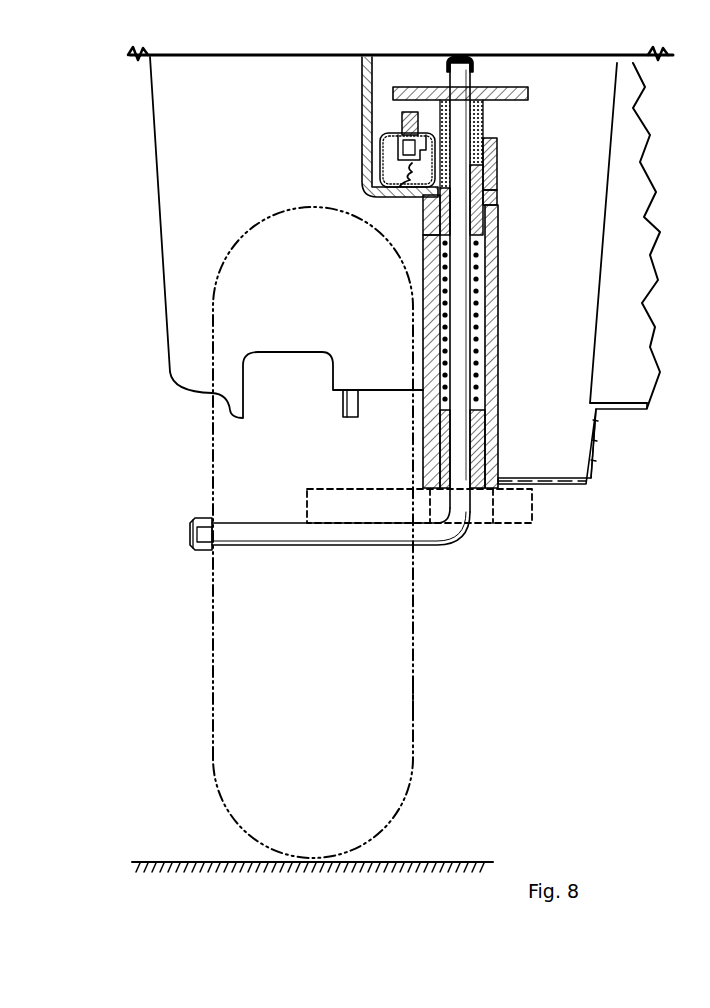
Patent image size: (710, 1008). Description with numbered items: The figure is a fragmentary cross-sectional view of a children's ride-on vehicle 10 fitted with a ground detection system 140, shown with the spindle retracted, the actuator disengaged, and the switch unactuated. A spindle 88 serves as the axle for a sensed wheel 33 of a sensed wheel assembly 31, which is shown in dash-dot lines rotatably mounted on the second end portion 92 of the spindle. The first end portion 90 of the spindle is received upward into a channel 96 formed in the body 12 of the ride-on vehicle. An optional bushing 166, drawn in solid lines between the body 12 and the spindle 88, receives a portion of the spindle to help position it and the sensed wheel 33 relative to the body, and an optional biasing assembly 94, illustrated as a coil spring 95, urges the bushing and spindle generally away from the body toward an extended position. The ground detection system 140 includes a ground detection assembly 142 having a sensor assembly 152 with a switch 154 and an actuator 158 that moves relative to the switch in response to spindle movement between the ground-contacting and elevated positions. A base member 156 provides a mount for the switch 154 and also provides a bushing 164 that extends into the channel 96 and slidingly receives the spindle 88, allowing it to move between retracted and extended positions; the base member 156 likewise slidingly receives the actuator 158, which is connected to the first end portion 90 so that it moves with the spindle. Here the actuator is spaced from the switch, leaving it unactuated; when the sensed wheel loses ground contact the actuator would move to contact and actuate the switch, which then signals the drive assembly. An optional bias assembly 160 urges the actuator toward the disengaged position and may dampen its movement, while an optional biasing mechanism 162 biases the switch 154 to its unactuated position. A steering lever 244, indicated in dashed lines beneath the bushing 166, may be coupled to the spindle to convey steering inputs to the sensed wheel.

The children's ride-on vehicle 10 is at (622, 470).
The body 12 is at (572, 486).
The sensed wheel assembly 31 is at (415, 702).
The sensed wheel 33 is at (415, 620).
The spindle 88 is at (462, 422).
The first end portion 90 is at (478, 220).
The second end portion 92 is at (298, 560).
The biasing assembly 94 is at (482, 318).
The coil spring 95 is at (480, 350).
The channel 96 is at (443, 330).
The ground detection system 140 is at (288, 88).
The ground detection assembly 142 is at (507, 165).
The sensor assembly 152 is at (497, 182).
The switch 154 is at (405, 128).
The base member 156 is at (437, 198).
The actuator 158 is at (548, 84).
The bias assembly 160 is at (482, 130).
The biasing mechanism 162 is at (400, 114).
The bushing 164 is at (445, 212).
The bushing 166 is at (440, 432).
The steering lever 244 is at (517, 527).